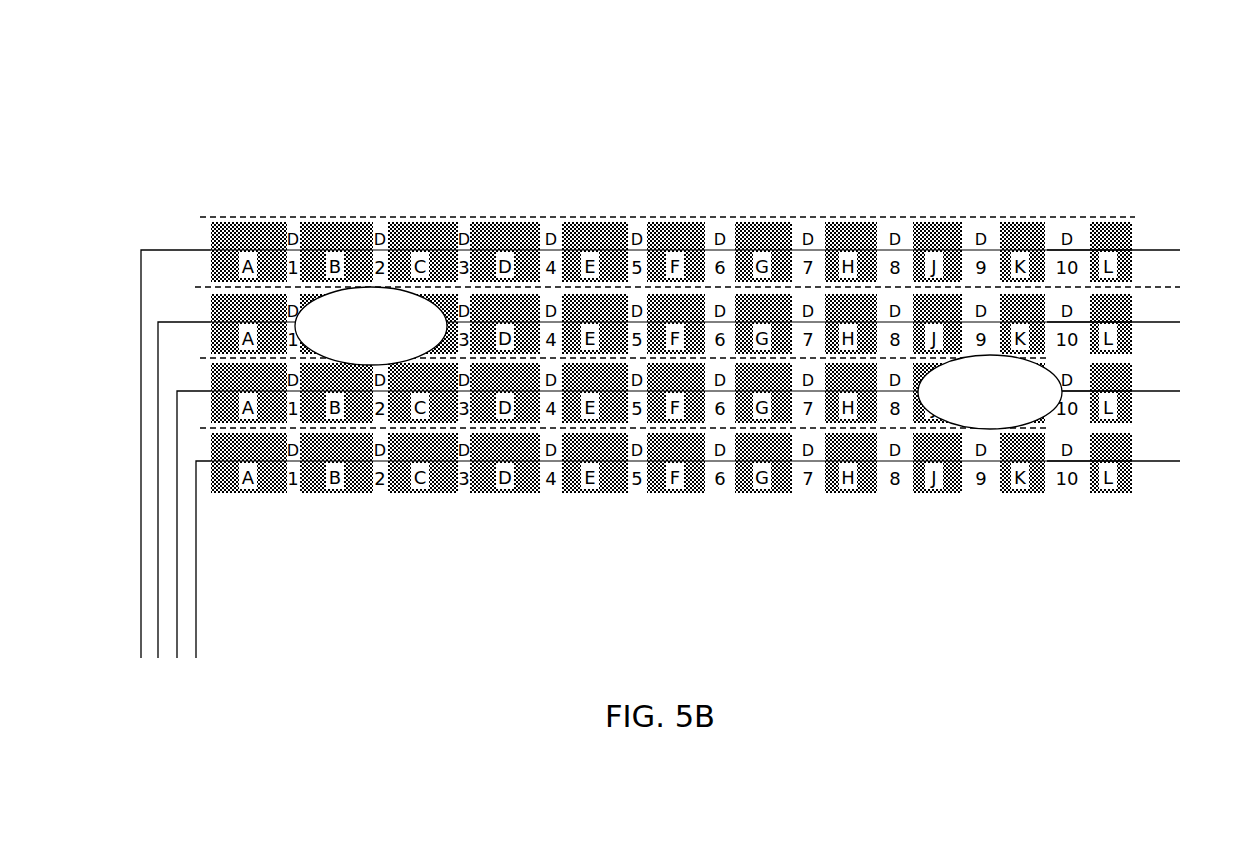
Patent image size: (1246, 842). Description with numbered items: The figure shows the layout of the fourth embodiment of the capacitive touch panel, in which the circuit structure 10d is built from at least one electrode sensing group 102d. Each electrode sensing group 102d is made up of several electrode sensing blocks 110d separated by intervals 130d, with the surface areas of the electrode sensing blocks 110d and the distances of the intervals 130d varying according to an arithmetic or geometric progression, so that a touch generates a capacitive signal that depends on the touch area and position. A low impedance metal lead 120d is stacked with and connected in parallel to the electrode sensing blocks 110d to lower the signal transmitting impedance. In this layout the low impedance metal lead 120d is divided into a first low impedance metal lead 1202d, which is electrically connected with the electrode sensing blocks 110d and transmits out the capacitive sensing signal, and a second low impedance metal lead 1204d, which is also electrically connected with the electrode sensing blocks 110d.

The circuit structure 10d is at (660, 354).
The low impedance metal lead 120d is at (636, 354).
The first low impedance metal lead 1202d is at (227, 388).
The second low impedance metal lead 1204d is at (556, 222).
The interval 130d is at (1058, 232).
The electrode sensing block 110d is at (1130, 218).
The electrode sensing group 102d is at (1152, 245).